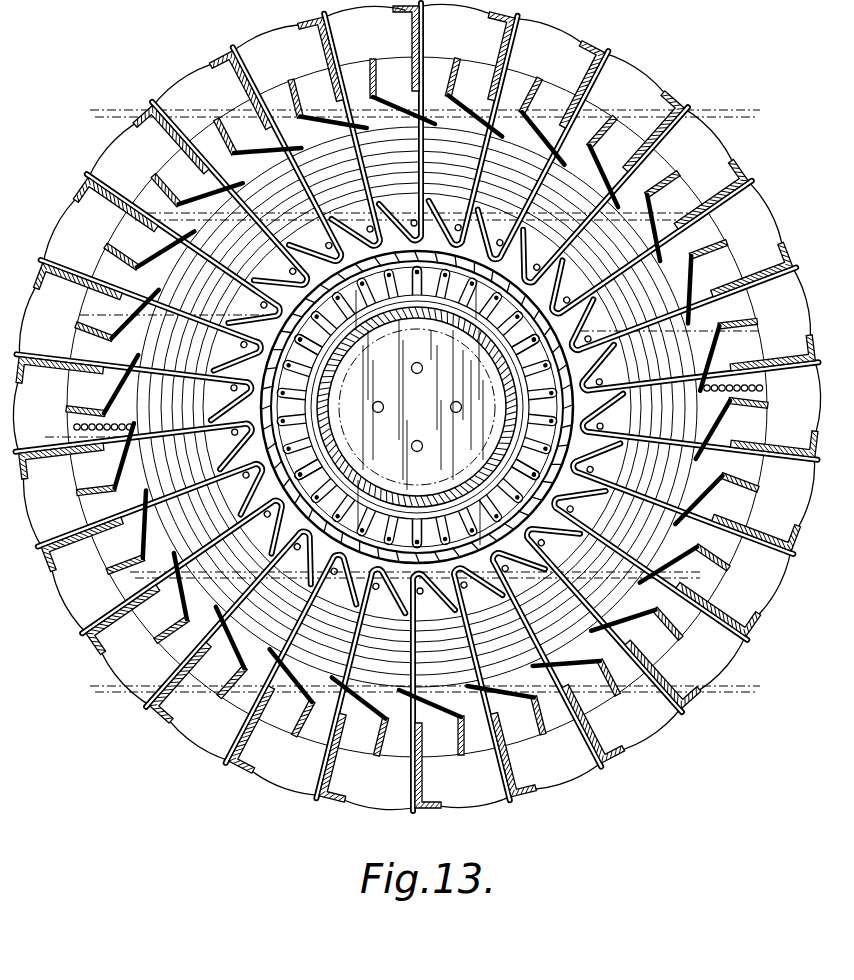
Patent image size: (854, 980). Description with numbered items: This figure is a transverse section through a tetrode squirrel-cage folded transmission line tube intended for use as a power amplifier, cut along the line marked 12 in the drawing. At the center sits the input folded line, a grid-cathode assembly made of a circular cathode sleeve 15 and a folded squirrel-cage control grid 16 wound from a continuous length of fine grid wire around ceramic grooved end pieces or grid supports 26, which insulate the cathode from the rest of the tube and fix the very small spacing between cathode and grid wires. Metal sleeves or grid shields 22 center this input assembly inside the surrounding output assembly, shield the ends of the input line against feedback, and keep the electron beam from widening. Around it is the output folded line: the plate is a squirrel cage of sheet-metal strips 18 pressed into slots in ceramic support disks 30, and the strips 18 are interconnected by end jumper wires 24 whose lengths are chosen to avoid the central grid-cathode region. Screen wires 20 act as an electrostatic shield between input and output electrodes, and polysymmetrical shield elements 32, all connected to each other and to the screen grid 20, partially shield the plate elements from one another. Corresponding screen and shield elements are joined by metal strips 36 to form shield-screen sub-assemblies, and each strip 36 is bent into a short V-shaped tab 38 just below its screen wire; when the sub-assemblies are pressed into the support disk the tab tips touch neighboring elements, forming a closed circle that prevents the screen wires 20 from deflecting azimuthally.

The section line 12- 12 is at (37, 373).
The cathode sleeve 15 is at (335, 358).
The control grid 16 is at (313, 452).
The plate strips 18 is at (440, 77).
The screen grid wires 20 is at (536, 263).
The grid shield sleeve 22 is at (500, 594).
The end jumper wire 24 is at (292, 182).
The grid support 26 is at (492, 330).
The ceramic disk 30 is at (592, 108).
The shield electrode element 32 is at (219, 67).
The metal strip 36 is at (332, 186).
The V-shaped tab 38 is at (262, 265).